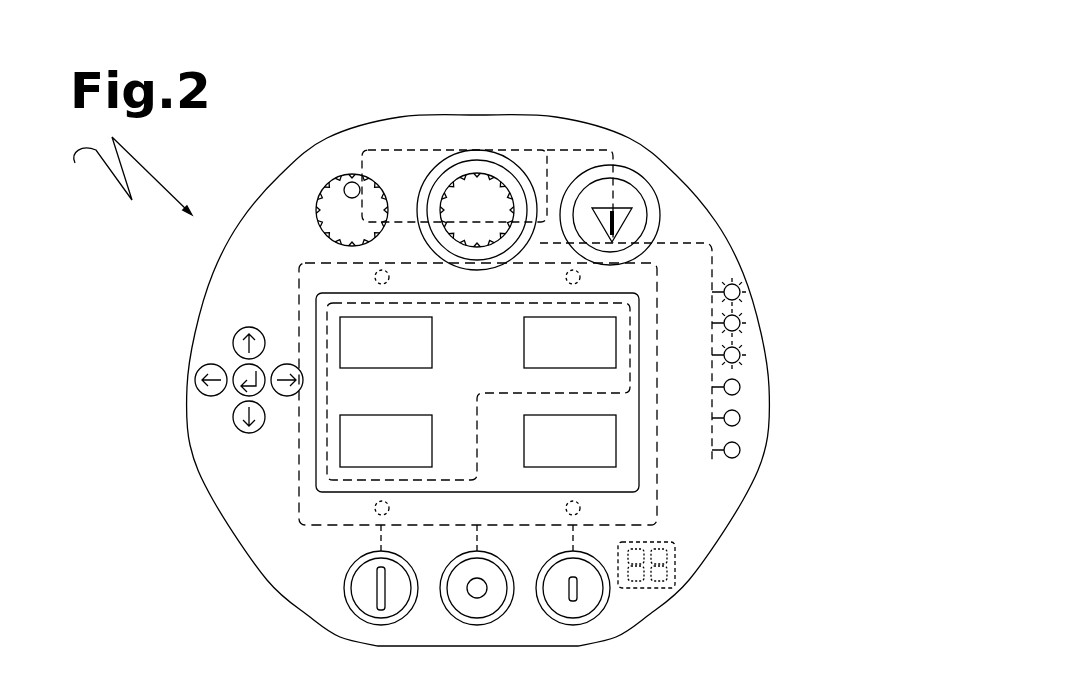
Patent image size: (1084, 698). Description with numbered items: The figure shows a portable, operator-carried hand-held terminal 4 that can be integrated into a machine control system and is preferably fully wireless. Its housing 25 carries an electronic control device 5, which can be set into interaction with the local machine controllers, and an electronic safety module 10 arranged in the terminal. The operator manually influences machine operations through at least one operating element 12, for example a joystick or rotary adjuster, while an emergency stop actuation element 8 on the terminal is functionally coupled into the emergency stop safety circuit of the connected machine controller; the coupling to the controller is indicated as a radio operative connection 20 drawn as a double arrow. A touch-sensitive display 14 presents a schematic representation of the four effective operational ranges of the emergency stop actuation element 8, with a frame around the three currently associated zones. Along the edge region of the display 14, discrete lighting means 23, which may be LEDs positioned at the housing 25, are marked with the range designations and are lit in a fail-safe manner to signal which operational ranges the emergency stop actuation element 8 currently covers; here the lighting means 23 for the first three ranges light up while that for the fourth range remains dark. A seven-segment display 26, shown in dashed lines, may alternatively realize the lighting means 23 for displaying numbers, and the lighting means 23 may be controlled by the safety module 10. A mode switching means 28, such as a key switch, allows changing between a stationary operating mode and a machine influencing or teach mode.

The hand-held terminal 4 is at (820, 112).
The electronic control device 5 is at (325, 527).
The emergency stop actuation element 8 is at (625, 197).
The electronic safety module 10 is at (474, 200).
The operating element 12 is at (330, 207).
The display 14 is at (315, 453).
The operative connection 20 is at (108, 177).
The lighting means 23 is at (790, 285).
The housing 25 is at (703, 222).
The 7-segment display 26 is at (677, 553).
The mode switching means 28 is at (615, 612).